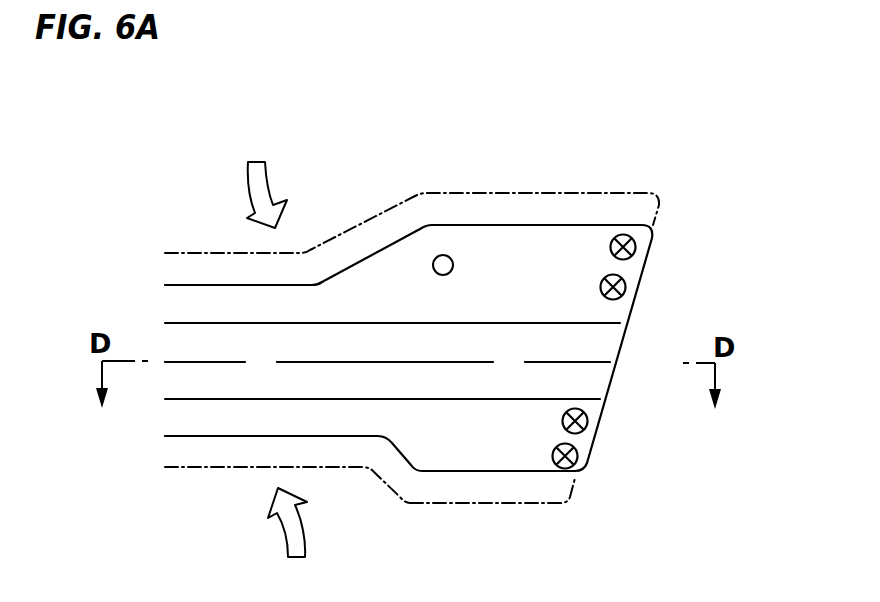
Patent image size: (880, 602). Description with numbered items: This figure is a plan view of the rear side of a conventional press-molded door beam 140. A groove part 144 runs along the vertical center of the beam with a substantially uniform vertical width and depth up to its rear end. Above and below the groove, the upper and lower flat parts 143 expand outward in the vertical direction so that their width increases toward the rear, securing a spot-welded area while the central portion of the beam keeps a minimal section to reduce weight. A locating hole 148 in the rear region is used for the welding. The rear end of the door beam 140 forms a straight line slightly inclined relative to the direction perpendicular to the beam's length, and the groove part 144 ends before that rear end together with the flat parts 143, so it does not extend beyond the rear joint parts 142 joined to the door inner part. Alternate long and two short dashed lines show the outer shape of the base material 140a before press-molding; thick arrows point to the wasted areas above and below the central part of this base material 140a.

The door beam 140 is at (262, 283).
The base material 140a is at (523, 193).
The rear joint parts 142 is at (627, 287).
The upper and lower flat parts 143 is at (397, 273).
The groove part 144 is at (344, 342).
The locating hole 148 is at (443, 265).